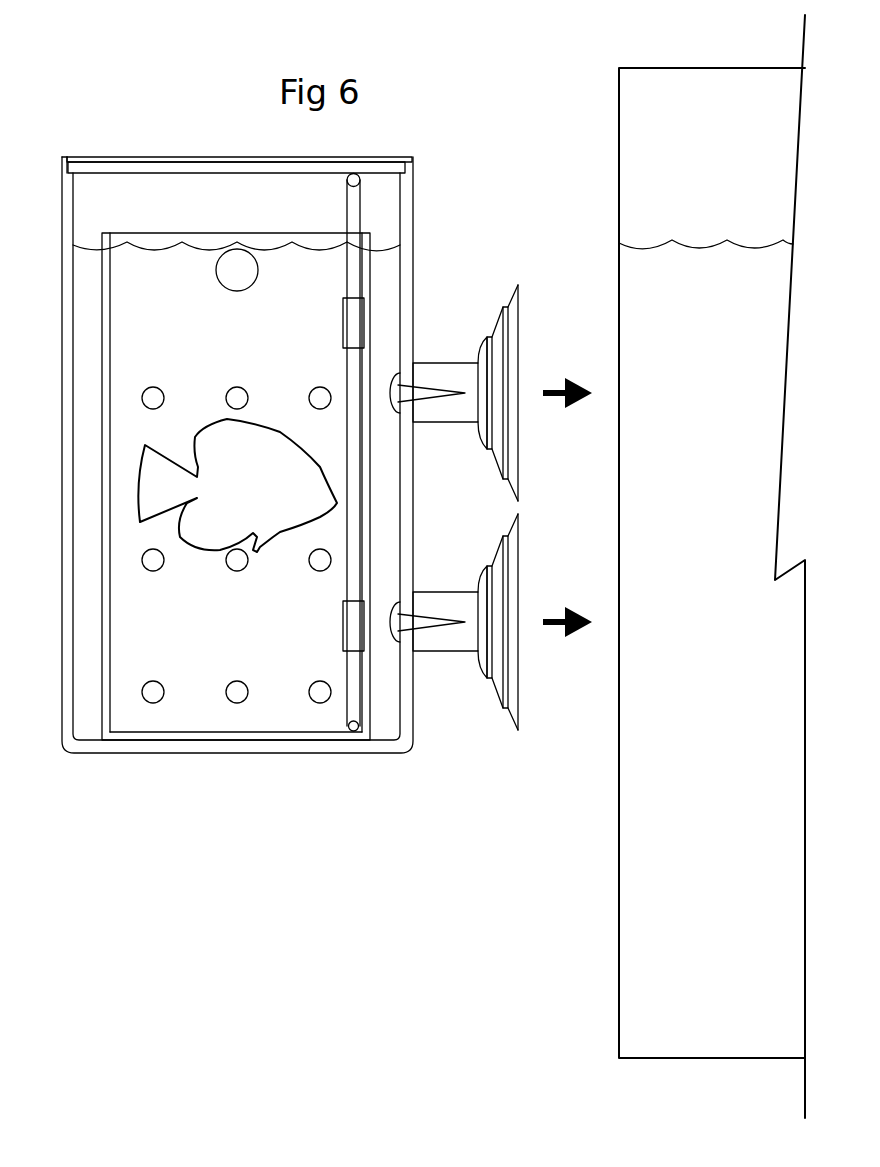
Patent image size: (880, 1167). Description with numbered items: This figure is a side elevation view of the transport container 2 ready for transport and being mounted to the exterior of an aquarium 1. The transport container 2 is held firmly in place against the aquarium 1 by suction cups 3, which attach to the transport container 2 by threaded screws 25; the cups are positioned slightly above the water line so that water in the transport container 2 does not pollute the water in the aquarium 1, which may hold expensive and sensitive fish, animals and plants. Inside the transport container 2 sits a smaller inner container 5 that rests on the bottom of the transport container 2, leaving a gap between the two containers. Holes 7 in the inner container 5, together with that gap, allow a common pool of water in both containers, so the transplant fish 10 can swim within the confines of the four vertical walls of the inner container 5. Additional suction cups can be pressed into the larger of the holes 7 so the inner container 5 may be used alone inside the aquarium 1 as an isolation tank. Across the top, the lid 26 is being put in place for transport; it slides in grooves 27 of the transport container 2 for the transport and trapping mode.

The aquarium 1 is at (707, 88).
The transport container 2 is at (412, 157).
The suction cups 3 is at (518, 285).
The inner container 5 is at (102, 408).
The holes 7 is at (153, 700).
The transplant fish 10 is at (237, 485).
The threaded screws 25 is at (397, 377).
The lid 26 is at (149, 164).
The grooves 27 is at (71, 169).